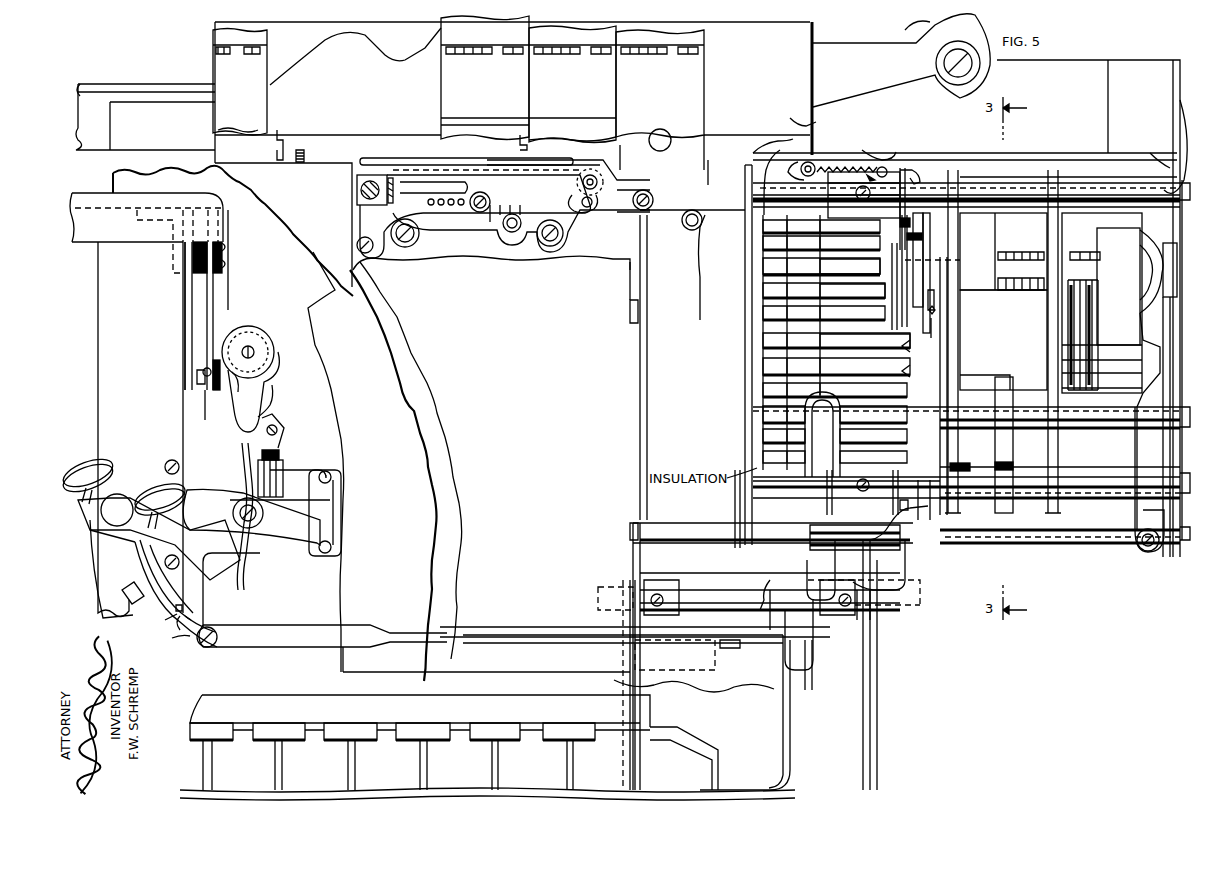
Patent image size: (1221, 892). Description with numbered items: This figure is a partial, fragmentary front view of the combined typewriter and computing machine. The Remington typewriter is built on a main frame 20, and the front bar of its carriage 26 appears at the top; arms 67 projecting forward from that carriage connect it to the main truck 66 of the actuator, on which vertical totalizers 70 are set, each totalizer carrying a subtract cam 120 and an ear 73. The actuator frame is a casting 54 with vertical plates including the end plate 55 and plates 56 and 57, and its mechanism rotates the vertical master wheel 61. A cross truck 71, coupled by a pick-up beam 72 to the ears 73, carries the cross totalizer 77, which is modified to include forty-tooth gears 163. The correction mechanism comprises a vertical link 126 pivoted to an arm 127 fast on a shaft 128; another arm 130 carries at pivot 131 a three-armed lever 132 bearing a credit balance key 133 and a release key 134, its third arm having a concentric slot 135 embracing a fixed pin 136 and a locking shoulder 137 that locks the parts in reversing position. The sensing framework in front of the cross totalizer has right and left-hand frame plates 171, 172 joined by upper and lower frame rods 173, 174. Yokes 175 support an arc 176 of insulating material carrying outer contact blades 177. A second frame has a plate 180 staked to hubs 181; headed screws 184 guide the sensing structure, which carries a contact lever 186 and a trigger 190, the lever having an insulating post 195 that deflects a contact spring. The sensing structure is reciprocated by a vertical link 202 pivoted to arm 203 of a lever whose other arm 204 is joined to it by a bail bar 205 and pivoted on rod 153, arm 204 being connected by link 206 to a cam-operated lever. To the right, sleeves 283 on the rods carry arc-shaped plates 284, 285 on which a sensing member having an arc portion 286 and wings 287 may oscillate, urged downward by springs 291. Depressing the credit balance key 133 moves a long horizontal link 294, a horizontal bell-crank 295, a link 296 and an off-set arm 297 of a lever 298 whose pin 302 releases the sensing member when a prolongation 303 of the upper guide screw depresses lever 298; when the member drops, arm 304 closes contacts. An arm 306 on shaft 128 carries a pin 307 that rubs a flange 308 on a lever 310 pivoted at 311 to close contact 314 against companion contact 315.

The main frame 20 is at (104, 353).
The carriage 26 is at (104, 85).
The casting 54 is at (1133, 63).
The end plate 55 is at (1172, 160).
The plate 56 is at (732, 518).
The plate 57 is at (647, 399).
The vertical master wheel 61 is at (312, 150).
The main truck 66 is at (812, 118).
The arms 67 is at (910, 32).
The vertical totalizers 70 is at (335, 39).
The cross truck 71 is at (1138, 232).
The pick-up beam 72 is at (426, 157).
The ears 73 is at (275, 132).
The cross totalizer 77 is at (1084, 236).
The subtract cams 120 is at (708, 166).
The vertical link 126 is at (322, 468).
The arm 127 is at (317, 554).
The shaft 128 is at (260, 545).
The arm 130 is at (210, 498).
The pivot 131 is at (118, 502).
The three-armed lever 132 is at (98, 550).
The credit balance key 133 is at (92, 458).
The release key 134 is at (142, 472).
The concentric slot 135 is at (177, 609).
The fixed pin 136 is at (204, 642).
The locking shoulder 137 is at (130, 590).
The rod 153 is at (770, 580).
The gears 163 is at (1085, 332).
The right-hand frame plate 171 is at (1179, 120).
The left-hand frame plate 172 is at (744, 165).
The upper frame rod 173 is at (746, 194).
The lower frame rod 174 is at (750, 485).
The yokes 175 is at (776, 166).
The arc 176 is at (760, 444).
The outer contact blade 177 is at (905, 342).
The plate 180 is at (896, 179).
The hubs 181 is at (897, 167).
The headed screws 184 is at (880, 264).
The contact lever 186 is at (923, 190).
The trigger 190 is at (922, 296).
The post 195 is at (922, 232).
The vertical link 202 is at (886, 305).
The arm 203 is at (897, 591).
The arm 204 is at (643, 558).
The yoke or bail bar 205 is at (737, 588).
The link 206 is at (635, 758).
The sleeves 283 is at (986, 180).
The arc-shaped plate 284 is at (952, 172).
The arc-shaped plate 285 is at (1054, 174).
The arc-shaped portion 286 is at (1003, 340).
The flat wings 287 is at (1064, 269).
The springs 291 is at (899, 334).
The long horizontal link 294 is at (286, 645).
The horizontal bell-crank 295 is at (801, 646).
The link 296 is at (786, 628).
The off-set arm 297 is at (820, 539).
The lever 298 is at (950, 433).
The pin 302 is at (946, 427).
The prolongation 303 is at (936, 256).
The arm 304 is at (1004, 390).
The arm 306 is at (281, 448).
The pin 307 is at (279, 429).
The flange 308 is at (271, 402).
The lever 310 is at (245, 410).
The pivot 311 is at (248, 346).
The contact 314 is at (196, 340).
The companion contact 315 is at (196, 371).